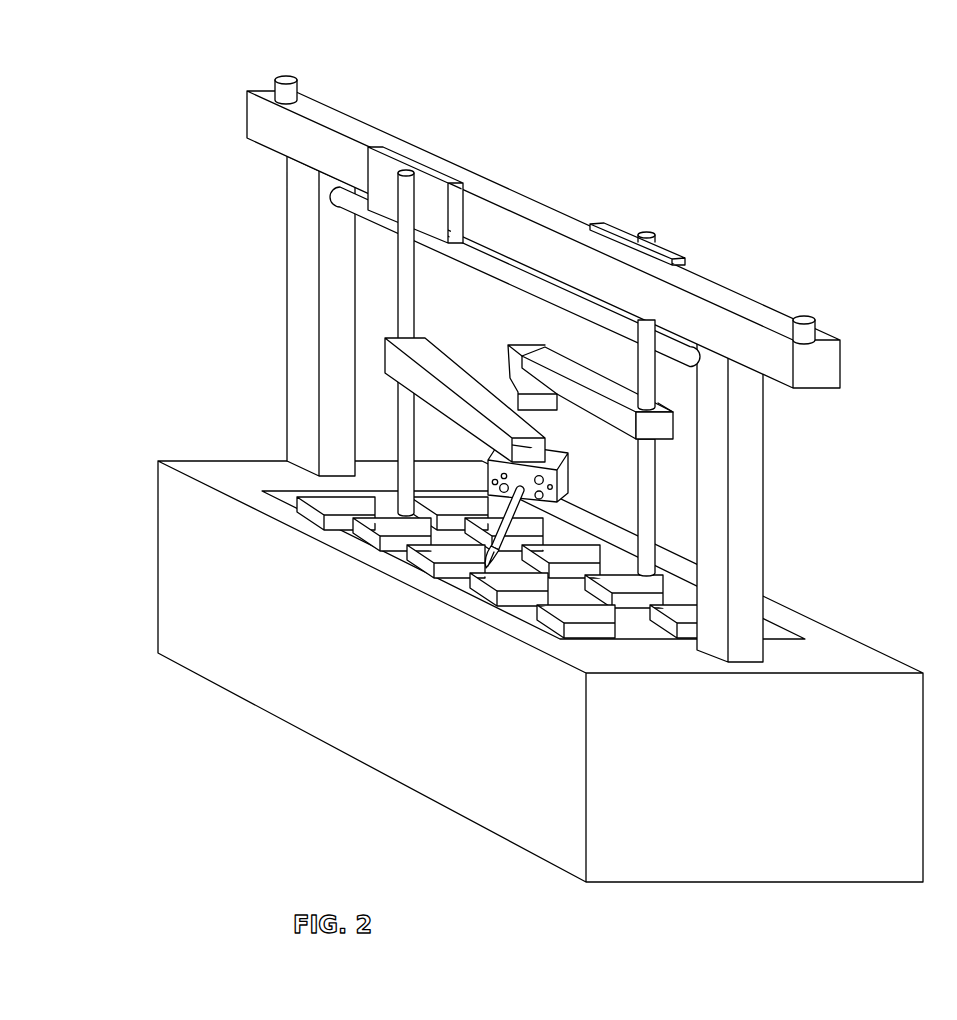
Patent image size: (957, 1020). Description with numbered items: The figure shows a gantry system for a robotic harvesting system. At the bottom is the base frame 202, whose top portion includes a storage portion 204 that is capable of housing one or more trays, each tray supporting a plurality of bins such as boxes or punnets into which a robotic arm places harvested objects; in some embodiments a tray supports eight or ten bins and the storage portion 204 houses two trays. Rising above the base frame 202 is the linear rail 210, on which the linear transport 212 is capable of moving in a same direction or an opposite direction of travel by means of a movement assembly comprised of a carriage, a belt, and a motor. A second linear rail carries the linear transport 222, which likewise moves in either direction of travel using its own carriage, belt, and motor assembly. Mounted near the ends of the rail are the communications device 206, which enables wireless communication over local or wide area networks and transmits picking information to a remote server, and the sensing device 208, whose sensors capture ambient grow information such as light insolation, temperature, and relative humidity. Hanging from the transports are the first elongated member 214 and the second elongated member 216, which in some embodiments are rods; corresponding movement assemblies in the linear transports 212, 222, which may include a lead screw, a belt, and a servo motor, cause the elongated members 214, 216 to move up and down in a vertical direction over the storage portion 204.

The base frame 202 is at (540, 671).
The storage portion 204 is at (392, 528).
The communications device 206 is at (310, 84).
The sensing device 208 is at (818, 326).
The linear rail 210 is at (236, 120).
The linear transport 212 is at (338, 201).
The first elongated member 214 is at (392, 254).
The second elongated member 216 is at (617, 354).
The linear transport 222 is at (672, 248).